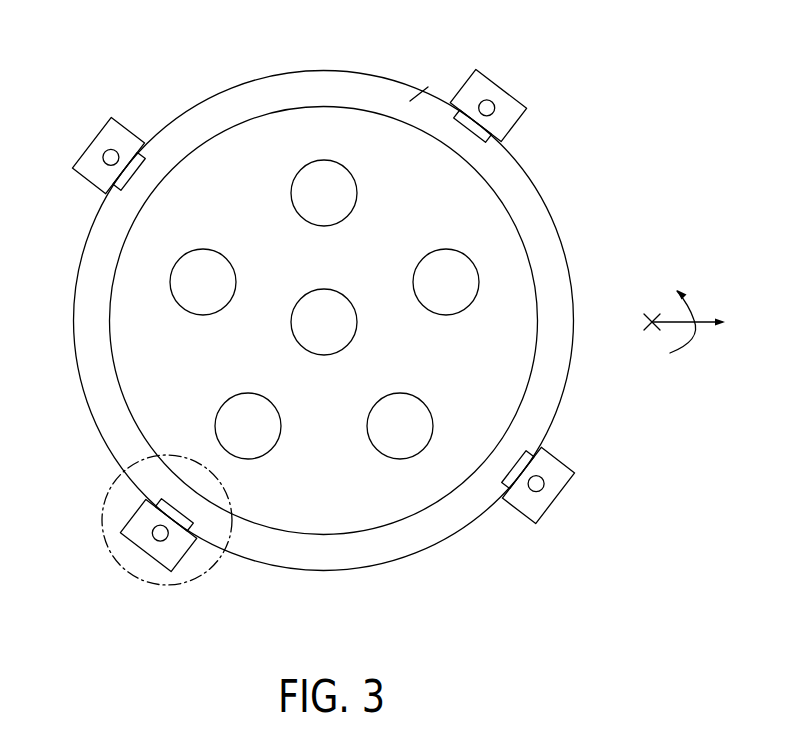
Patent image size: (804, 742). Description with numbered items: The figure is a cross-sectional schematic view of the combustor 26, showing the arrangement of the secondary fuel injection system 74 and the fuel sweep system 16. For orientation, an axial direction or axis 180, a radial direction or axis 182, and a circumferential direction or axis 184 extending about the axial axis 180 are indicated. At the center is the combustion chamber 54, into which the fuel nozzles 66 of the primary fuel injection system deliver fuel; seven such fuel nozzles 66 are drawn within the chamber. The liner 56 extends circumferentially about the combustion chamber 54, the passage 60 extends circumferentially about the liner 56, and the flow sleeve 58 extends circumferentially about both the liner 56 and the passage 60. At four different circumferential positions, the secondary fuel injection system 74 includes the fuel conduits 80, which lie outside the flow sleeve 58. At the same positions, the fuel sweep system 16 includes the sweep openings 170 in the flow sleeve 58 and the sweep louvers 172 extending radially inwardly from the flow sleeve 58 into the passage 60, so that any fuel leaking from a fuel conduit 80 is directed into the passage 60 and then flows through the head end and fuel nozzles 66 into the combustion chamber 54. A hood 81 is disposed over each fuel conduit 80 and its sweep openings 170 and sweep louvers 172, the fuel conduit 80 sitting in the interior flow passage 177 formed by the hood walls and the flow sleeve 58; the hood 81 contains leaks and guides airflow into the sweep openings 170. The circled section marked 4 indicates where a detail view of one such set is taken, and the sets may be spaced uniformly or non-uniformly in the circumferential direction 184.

The combustor 26 is at (582, 175).
The flow sleeve 58 is at (360, 73).
The liner 56 is at (318, 108).
The passage 60 is at (421, 91).
The combustion chamber 54 is at (382, 262).
The fuel nozzles 66 is at (336, 205).
The interior flow passage 177 is at (513, 115).
The fuel conduit 80 is at (496, 101).
The hood 81 is at (497, 76).
The fuel sweep system 16 is at (468, 140).
The sweep louvers 172 is at (506, 471).
The sweep openings 170 is at (533, 472).
The secondary fuel injection system 74 is at (592, 507).
The section line for FIG. 4 is at (157, 453).
The axial direction or axis 180 is at (648, 322).
The radial direction or axis 182 is at (700, 335).
The circumferential direction or axis 184 is at (695, 312).